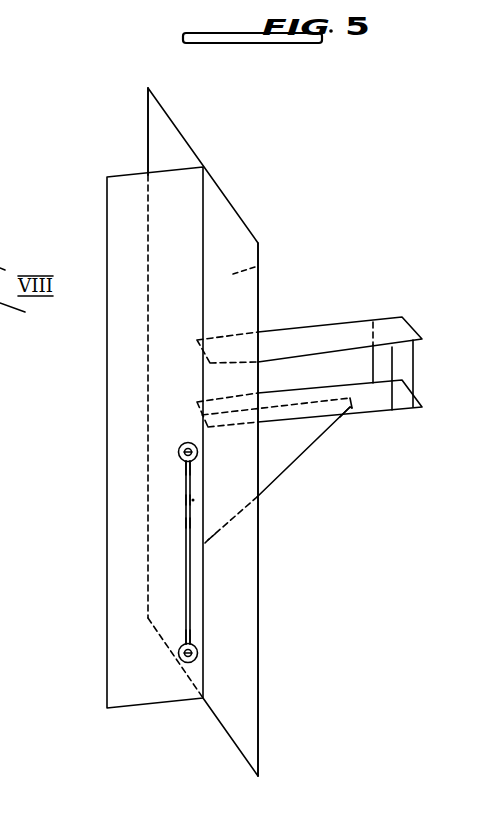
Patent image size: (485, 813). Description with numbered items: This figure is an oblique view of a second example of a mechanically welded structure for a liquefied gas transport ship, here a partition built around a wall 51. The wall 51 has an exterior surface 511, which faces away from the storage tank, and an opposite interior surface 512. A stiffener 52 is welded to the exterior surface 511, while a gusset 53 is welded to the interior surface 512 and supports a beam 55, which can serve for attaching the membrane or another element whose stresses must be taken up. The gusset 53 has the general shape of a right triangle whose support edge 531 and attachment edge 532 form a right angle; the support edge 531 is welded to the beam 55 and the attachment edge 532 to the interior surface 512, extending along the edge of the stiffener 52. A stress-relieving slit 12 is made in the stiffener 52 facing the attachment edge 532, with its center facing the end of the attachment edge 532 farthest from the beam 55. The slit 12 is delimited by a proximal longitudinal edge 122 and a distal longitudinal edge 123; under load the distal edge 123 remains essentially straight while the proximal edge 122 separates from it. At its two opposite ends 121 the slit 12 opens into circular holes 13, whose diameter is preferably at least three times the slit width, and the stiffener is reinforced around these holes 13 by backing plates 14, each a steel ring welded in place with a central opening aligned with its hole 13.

The stress-relieving slit 12 is at (187, 550).
The opposite ends 121 is at (190, 467).
The proximal longitudinal edge 122 is at (193, 500).
The distal longitudinal edge 123 is at (187, 523).
The circular holes 13 is at (178, 452).
The backing plates 14 is at (187, 442).
The wall 51 is at (174, 120).
The exterior surface 511 is at (162, 143).
The interior surface 512 is at (258, 265).
The stiffener 52 is at (114, 212).
The gusset 53 is at (277, 452).
The support edge 531 is at (282, 410).
The attachment edge 532 is at (210, 505).
The beam 55 is at (322, 337).